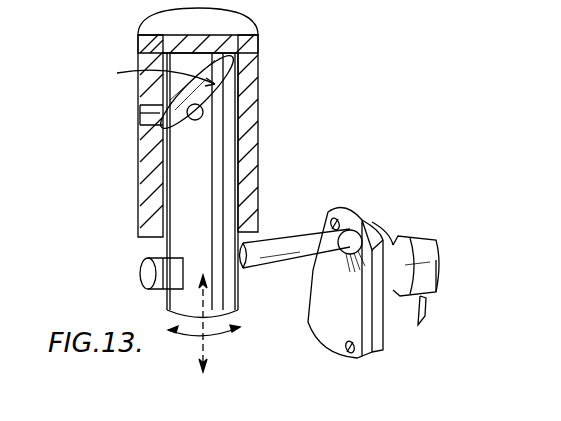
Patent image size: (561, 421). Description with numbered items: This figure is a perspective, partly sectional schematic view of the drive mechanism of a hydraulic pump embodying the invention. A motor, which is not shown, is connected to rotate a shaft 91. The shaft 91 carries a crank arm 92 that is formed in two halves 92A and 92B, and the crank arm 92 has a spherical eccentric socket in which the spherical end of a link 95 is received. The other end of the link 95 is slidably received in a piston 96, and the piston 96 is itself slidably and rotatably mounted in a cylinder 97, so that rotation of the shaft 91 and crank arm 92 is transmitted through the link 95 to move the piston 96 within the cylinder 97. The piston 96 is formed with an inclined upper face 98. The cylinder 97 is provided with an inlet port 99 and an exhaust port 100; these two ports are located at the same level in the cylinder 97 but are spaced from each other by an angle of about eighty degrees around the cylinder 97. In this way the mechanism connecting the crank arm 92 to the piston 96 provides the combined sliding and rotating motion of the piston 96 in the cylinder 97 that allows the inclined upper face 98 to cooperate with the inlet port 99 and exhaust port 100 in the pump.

The shaft 91 is at (432, 258).
The crank arm 92 is at (326, 315).
The first half of crank arm 92A is at (352, 212).
The second half of crank arm 92B is at (382, 228).
The link 95 is at (267, 257).
The piston 96 is at (218, 155).
The cylinder 97 is at (248, 71).
The inclined upper face 98 is at (150, 73).
The inlet port 99 is at (150, 113).
The exhaust port 100 is at (180, 113).